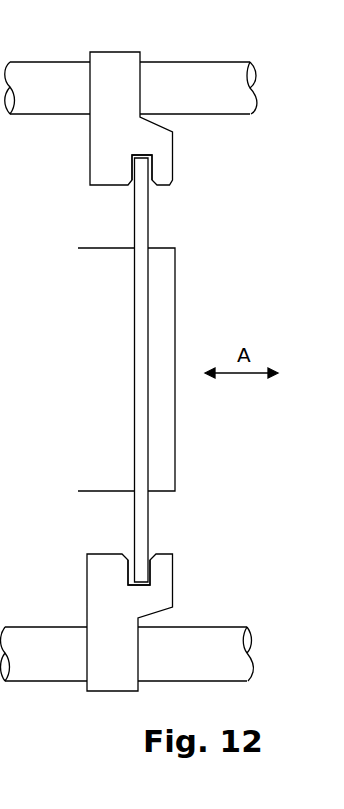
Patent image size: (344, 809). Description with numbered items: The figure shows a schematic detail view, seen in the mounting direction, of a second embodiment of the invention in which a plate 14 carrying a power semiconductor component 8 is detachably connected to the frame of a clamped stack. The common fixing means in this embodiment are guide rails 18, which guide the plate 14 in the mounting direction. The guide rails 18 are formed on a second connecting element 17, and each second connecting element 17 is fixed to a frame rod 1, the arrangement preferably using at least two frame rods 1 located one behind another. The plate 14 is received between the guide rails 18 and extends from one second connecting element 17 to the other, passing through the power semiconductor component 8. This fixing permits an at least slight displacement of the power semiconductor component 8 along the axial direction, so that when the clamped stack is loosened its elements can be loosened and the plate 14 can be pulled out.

The frame rod 1 is at (53, 100).
The second connecting element 17 is at (137, 52).
The guide rail 18 is at (165, 173).
The power semiconductor component 8 is at (110, 482).
The plate 14 is at (145, 493).